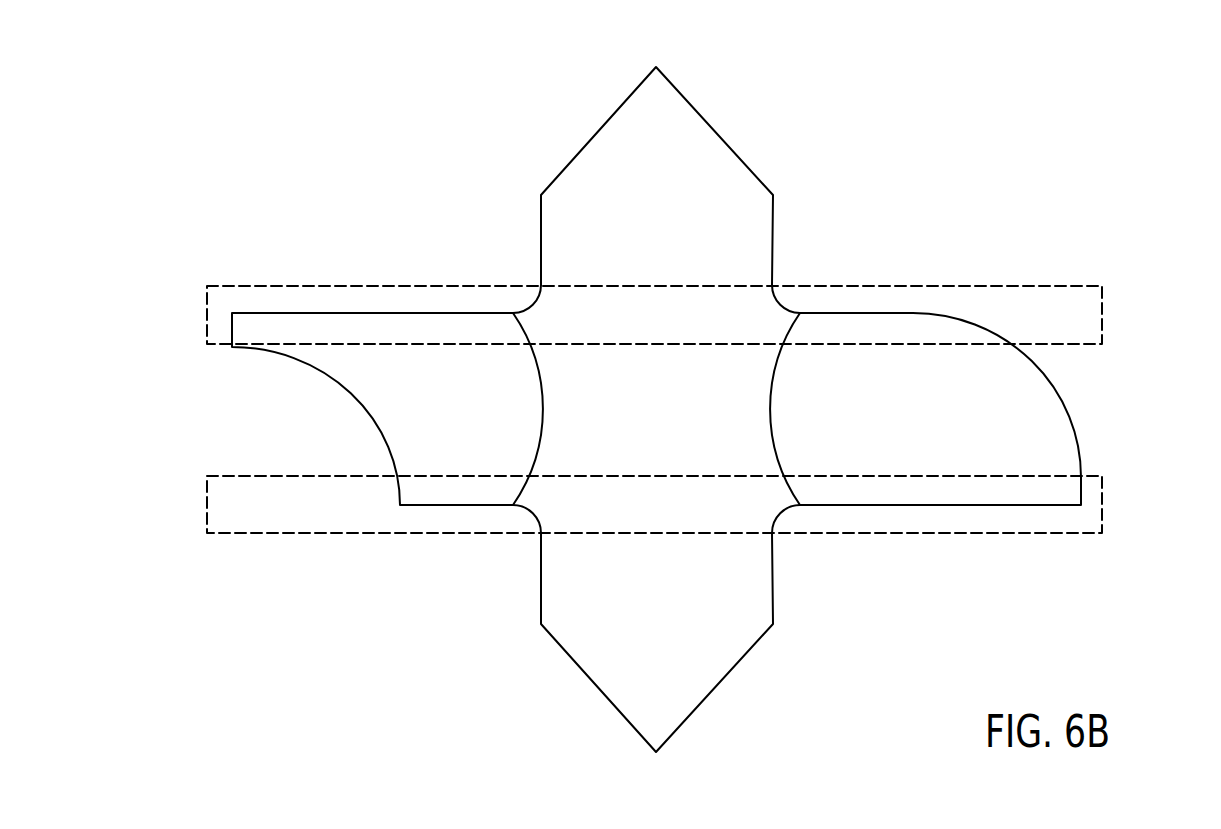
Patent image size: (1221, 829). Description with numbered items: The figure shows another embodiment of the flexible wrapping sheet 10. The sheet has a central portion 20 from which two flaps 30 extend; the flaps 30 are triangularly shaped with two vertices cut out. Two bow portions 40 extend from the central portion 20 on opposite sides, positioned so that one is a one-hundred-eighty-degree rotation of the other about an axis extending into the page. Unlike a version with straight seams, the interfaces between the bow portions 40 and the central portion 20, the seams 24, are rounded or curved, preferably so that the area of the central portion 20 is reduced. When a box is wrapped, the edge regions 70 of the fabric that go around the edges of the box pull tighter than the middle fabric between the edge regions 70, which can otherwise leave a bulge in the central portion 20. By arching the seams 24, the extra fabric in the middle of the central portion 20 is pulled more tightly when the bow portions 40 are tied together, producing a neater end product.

The wrapping sheet 10 is at (452, 123).
The central portion 20 is at (656, 438).
The seam 24 is at (543, 415).
The flap 30 is at (712, 147).
The bow portion 40 is at (312, 450).
The edge region 70 is at (1098, 318).